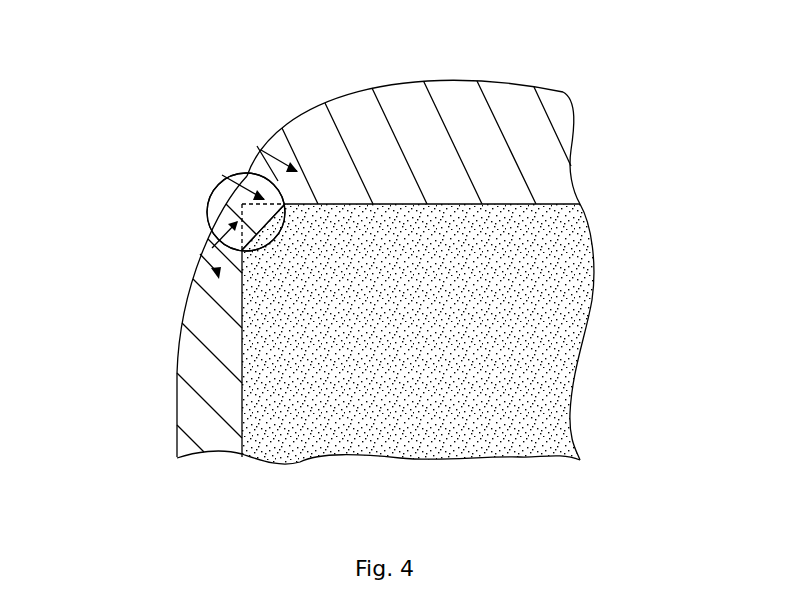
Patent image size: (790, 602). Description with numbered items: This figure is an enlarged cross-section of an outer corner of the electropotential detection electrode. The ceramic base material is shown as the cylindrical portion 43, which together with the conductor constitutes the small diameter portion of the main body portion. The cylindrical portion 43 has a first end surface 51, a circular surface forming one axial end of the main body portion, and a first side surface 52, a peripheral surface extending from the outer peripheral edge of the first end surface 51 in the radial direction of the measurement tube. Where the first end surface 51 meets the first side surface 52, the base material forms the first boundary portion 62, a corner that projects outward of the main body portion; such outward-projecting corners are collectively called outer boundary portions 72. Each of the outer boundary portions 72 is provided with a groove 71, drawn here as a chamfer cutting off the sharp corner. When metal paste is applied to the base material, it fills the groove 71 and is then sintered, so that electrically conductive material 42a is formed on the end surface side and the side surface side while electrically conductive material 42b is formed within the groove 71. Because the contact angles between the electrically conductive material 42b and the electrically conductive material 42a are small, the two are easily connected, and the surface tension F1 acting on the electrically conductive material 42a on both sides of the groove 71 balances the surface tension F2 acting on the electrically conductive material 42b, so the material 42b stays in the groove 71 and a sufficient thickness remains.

The electrically conductive material 42a is at (455, 103).
The electrically conductive material 42b is at (226, 198).
The cylindrical portion 43 is at (517, 340).
The first end surface 51 is at (503, 204).
The first side surface 52 is at (241, 393).
The first boundary portion 62 is at (166, 197).
The outer boundary portions 72 is at (190, 182).
The groove 71 is at (261, 211).
The surface tension F1 is at (261, 150).
The surface tension F2 is at (222, 175).